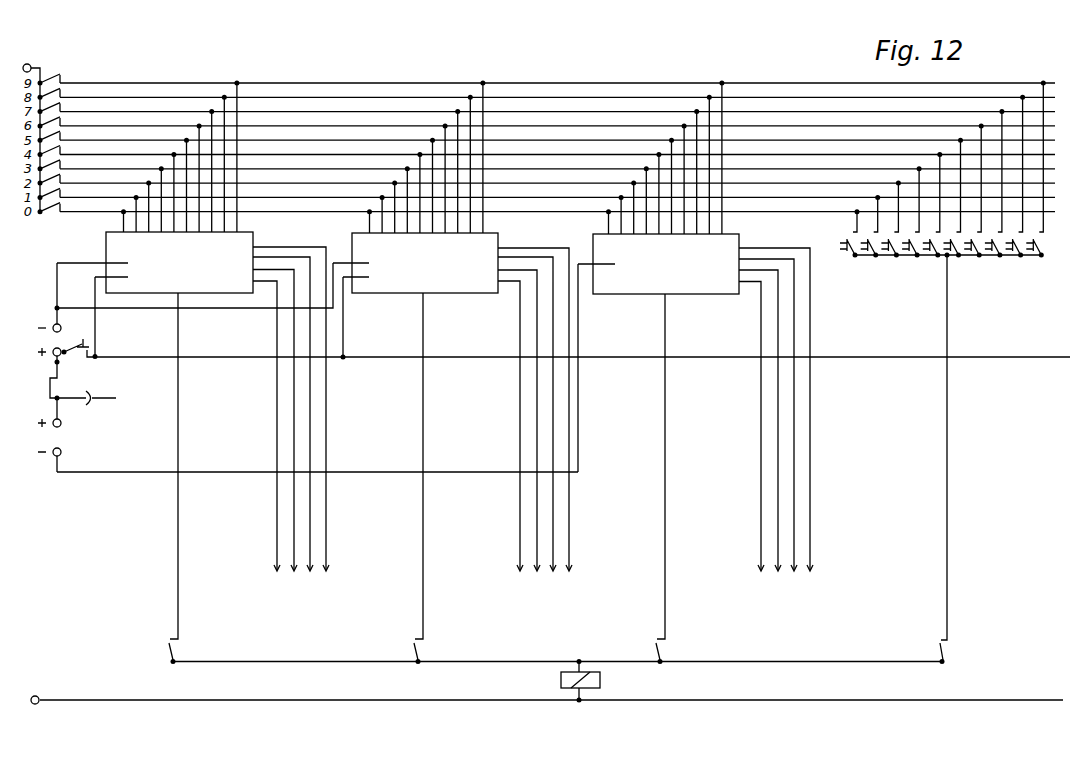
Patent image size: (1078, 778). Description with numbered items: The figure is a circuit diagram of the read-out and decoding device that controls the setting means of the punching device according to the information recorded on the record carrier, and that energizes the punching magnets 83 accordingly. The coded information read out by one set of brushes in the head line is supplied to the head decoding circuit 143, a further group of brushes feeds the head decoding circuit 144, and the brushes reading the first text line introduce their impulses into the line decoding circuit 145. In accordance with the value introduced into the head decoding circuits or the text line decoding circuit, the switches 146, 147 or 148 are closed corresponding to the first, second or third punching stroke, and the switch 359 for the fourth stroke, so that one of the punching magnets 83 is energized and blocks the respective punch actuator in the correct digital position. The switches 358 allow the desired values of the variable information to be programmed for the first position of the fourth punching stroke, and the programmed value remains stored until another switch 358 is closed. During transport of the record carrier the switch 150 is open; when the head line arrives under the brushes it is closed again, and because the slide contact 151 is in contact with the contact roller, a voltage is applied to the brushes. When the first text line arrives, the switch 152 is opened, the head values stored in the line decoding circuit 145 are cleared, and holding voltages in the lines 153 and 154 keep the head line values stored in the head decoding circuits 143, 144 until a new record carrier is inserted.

The head decoding circuit 143 is at (247, 243).
The head decoding circuit 144 is at (490, 243).
The line decoding circuit 145 is at (733, 242).
The switch 146 is at (167, 652).
The switch 147 is at (411, 652).
The switch 148 is at (653, 650).
The switch 150 is at (67, 300).
The slide contact 151 is at (102, 400).
The switch 152 is at (60, 372).
The line 153 is at (98, 340).
The line 154 is at (343, 331).
The switch 358 is at (846, 255).
The switch 359 is at (946, 651).
The punching magnet 83 is at (601, 681).